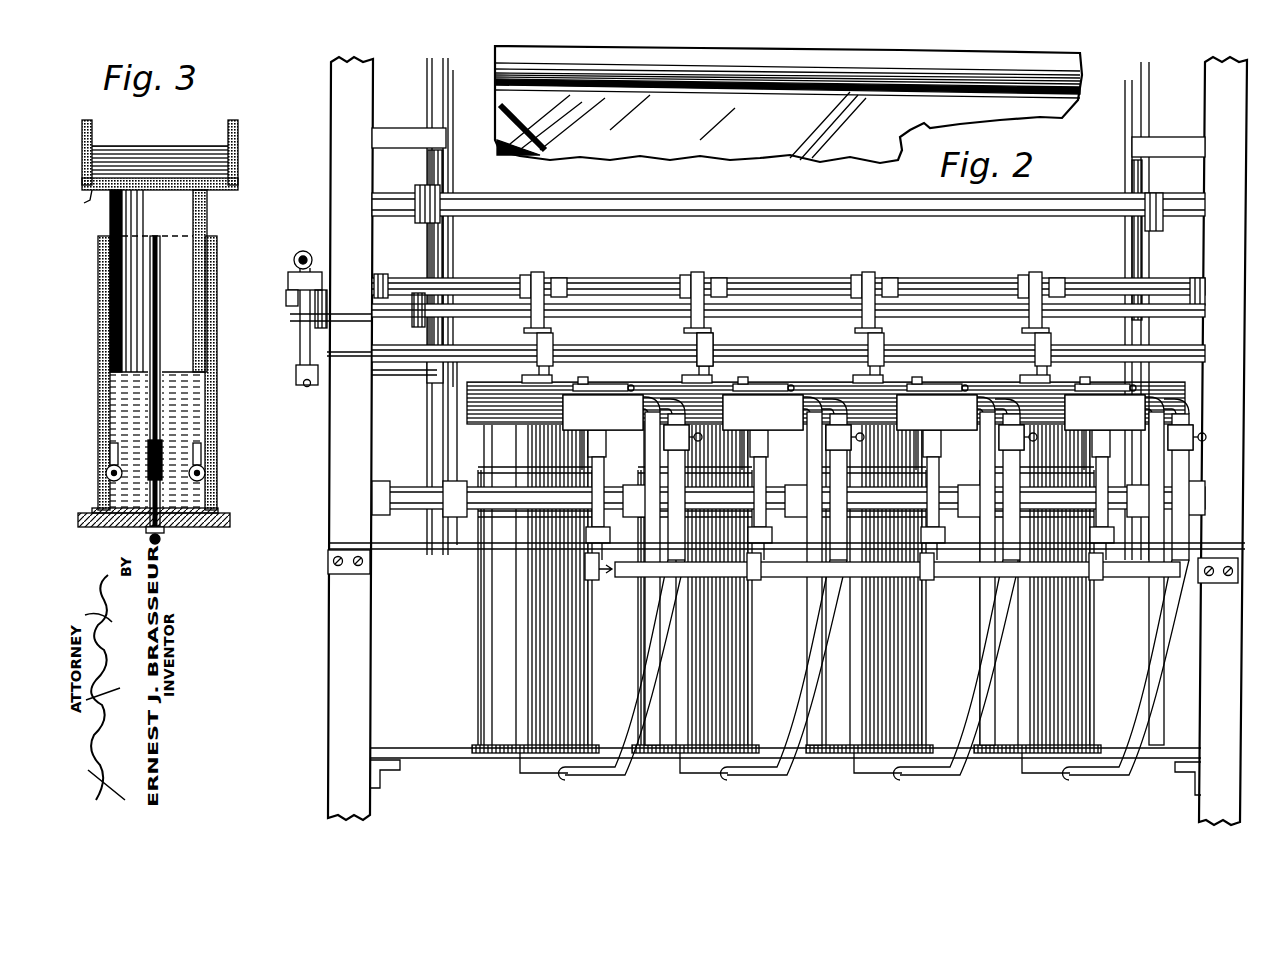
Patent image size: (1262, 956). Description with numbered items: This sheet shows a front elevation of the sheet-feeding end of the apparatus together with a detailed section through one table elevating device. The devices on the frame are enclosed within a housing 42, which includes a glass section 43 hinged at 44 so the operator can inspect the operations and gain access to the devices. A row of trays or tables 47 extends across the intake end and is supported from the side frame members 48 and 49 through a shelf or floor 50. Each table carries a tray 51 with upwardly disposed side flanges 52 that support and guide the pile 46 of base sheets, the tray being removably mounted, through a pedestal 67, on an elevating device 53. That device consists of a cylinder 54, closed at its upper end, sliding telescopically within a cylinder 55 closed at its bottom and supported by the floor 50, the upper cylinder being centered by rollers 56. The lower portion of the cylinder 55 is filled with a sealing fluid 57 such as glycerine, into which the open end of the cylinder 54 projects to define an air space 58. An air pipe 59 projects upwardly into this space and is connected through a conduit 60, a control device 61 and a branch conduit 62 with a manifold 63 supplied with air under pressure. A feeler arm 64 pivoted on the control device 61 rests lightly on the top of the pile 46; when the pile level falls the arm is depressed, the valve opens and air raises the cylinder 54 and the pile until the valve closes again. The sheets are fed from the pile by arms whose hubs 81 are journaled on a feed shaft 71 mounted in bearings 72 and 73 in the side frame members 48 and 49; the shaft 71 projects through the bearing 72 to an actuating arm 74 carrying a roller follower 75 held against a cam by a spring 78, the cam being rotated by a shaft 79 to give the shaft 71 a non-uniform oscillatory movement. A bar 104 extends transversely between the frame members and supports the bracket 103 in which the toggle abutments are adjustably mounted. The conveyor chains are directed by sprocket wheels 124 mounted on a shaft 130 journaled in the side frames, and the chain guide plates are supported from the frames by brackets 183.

In FIG. 2, the housing 42 is at (593, 72).
In FIG. 2, the glass section 43 is at (688, 150).
In FIG. 2, the hinge 44 is at (738, 88).
In FIG. 3, the pile 46 is at (148, 160).
In FIG. 2, the pile 46 is at (481, 396).
In FIG. 2, the tray or table 47 is at (426, 620).
In FIG. 2, the side frame member 48 is at (335, 432).
In FIG. 2, the side frame member 49 is at (1212, 789).
In FIG. 2, the shelf or floor 50 is at (443, 750).
In FIG. 3, the tray 51 is at (236, 185).
In FIG. 3, the side flange 52 is at (234, 141).
In FIG. 3, the elevating device 53 is at (208, 262).
In FIG. 3, the cylinder 54 is at (209, 212).
In FIG. 3, the cylinder 55 is at (209, 485).
In FIG. 3, the rollers 56 is at (110, 471).
In FIG. 3, the sealing fluid 57 is at (108, 498).
In FIG. 3, the air space 58 is at (183, 318).
In FIG. 3, the air pipe 59 is at (165, 310).
In FIG. 3, the conduit 60 is at (164, 537).
In FIG. 2, the conduit 60 is at (592, 772).
In FIG. 2, the control device 61 is at (780, 347).
In FIG. 2, the branch conduit 62 is at (813, 534).
In FIG. 2, the manifold 63 is at (786, 577).
In FIG. 2, the arm 64 is at (738, 386).
In FIG. 3, the pedestal 67 is at (92, 192).
In FIG. 2, the feed shaft 71 is at (640, 282).
In FIG. 2, the bearing 72 is at (387, 273).
In FIG. 2, the bearing 73 is at (1192, 285).
In FIG. 2, the actuating arm 74 is at (302, 341).
In FIG. 2, the roller follower 75 is at (303, 387).
In FIG. 2, the spring 78 is at (300, 252).
In FIG. 2, the shaft 79 is at (782, 303).
In FIG. 2, the hub 81 is at (537, 275).
In FIG. 2, the fixture or bracket 103 is at (548, 352).
In FIG. 2, the bar 104 is at (660, 355).
In FIG. 2, the sprocket wheels 124 is at (440, 181).
In FIG. 2, the shaft 130 is at (793, 206).
In FIG. 2, the bracket 183 is at (402, 140).